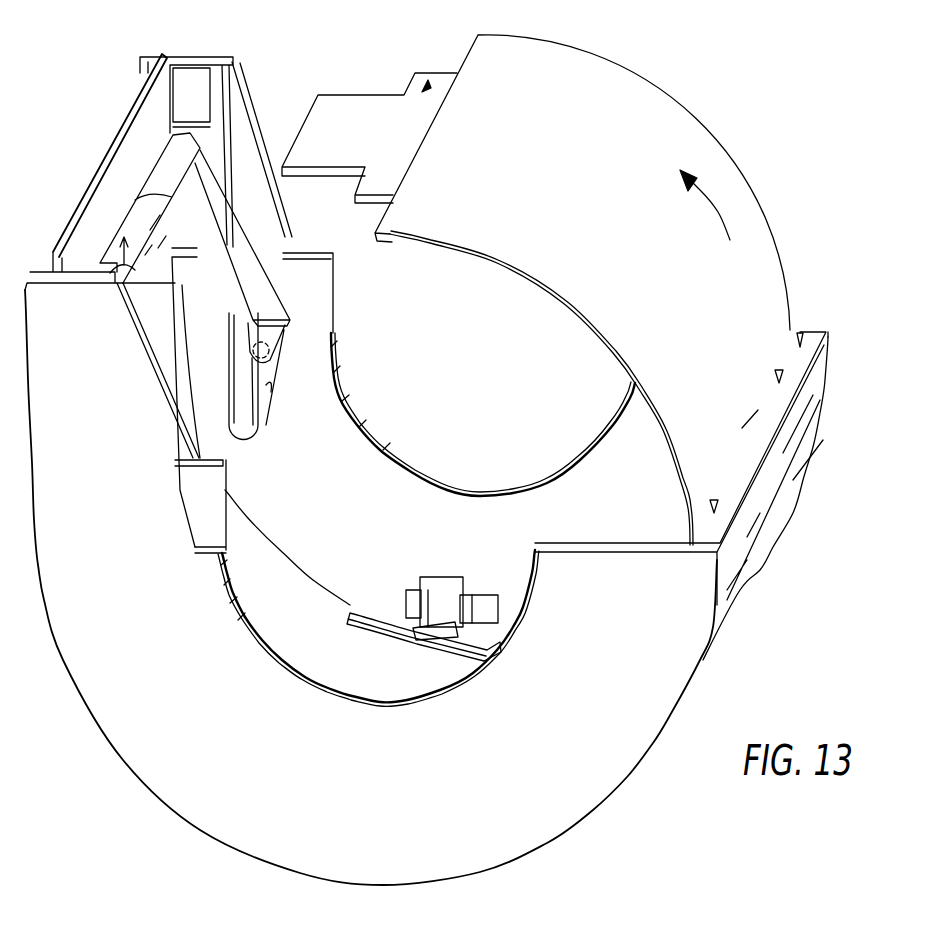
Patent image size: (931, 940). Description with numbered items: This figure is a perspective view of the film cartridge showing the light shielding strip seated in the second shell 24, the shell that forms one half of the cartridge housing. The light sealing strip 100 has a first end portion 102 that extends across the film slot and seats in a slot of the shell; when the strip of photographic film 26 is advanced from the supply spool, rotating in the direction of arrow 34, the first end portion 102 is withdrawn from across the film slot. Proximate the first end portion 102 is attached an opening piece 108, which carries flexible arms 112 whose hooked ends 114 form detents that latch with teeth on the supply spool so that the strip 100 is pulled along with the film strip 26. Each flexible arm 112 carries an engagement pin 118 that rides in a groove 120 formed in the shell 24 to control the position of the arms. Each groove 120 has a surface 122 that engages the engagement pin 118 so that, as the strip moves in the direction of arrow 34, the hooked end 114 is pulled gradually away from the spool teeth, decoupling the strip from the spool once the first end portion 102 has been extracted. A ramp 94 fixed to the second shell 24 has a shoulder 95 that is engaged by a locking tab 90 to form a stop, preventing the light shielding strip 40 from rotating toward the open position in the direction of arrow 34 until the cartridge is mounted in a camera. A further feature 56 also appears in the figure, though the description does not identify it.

The second shell 24 is at (668, 699).
The strip of photographic film 26 is at (427, 88).
The arrow 34 is at (705, 222).
The light shielding strip 40 is at (628, 82).
The plate 56 is at (355, 108).
The locking tab 90 is at (433, 582).
The ramp 94 is at (488, 596).
The shoulder 95 is at (450, 590).
The light sealing strip 100 is at (691, 326).
The first end portion 102 is at (112, 177).
The opening piece 108 is at (122, 278).
The flexible arms 112 is at (226, 274).
The hooked ends 114 is at (277, 333).
The engagement pin 118 is at (252, 345).
The groove 120 is at (260, 423).
The surface 122 is at (265, 389).